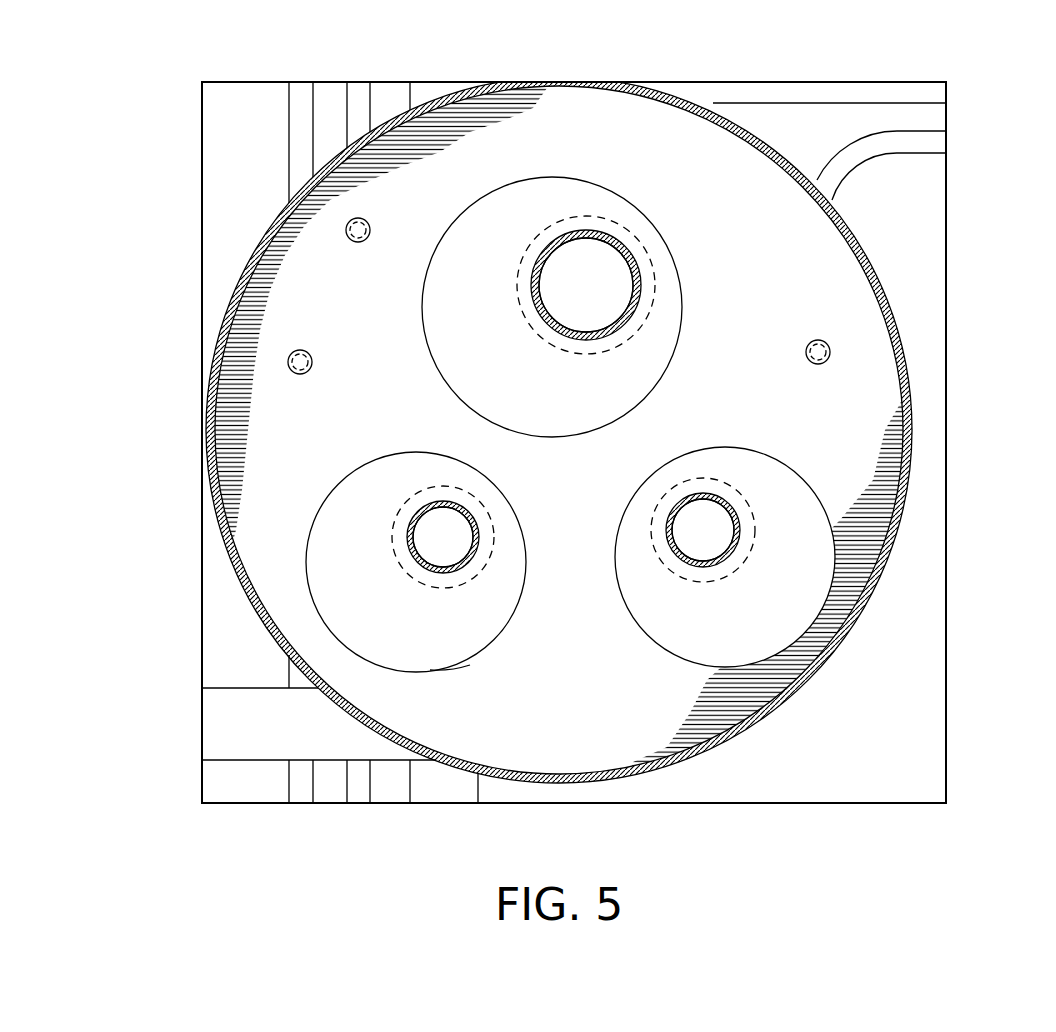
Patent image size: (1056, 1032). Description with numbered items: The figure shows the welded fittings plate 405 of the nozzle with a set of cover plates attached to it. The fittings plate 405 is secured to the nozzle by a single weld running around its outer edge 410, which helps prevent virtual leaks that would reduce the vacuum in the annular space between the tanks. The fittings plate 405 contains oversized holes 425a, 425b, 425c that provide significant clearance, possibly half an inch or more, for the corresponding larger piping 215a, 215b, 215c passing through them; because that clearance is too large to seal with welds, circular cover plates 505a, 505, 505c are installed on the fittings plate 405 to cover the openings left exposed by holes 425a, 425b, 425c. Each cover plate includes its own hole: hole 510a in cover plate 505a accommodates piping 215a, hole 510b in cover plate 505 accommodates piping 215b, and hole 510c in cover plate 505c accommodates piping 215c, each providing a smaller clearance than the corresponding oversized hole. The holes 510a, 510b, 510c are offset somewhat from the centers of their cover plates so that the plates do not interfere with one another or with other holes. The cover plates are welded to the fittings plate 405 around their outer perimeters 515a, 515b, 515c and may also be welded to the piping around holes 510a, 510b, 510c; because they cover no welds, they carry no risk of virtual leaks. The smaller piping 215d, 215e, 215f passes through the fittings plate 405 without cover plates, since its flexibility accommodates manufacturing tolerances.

The fittings plate 405 is at (808, 258).
The outer edge 410 is at (765, 143).
The cover plate 505 is at (783, 597).
The cover plate 505a is at (552, 190).
The cover plate 505c is at (437, 615).
The hole 510a is at (532, 297).
The hole 510b is at (676, 546).
The hole 510c is at (430, 568).
The outer perimeter 515a is at (507, 187).
The outer perimeter 515b is at (833, 585).
The outer perimeter 515c is at (450, 672).
The hole 425a is at (650, 250).
The hole 425b is at (756, 492).
The hole 425c is at (488, 507).
The piping 215a is at (590, 268).
The piping 215b is at (706, 530).
The piping 215c is at (445, 535).
The piping 215d is at (827, 347).
The piping 215e is at (357, 227).
The piping 215f is at (300, 362).